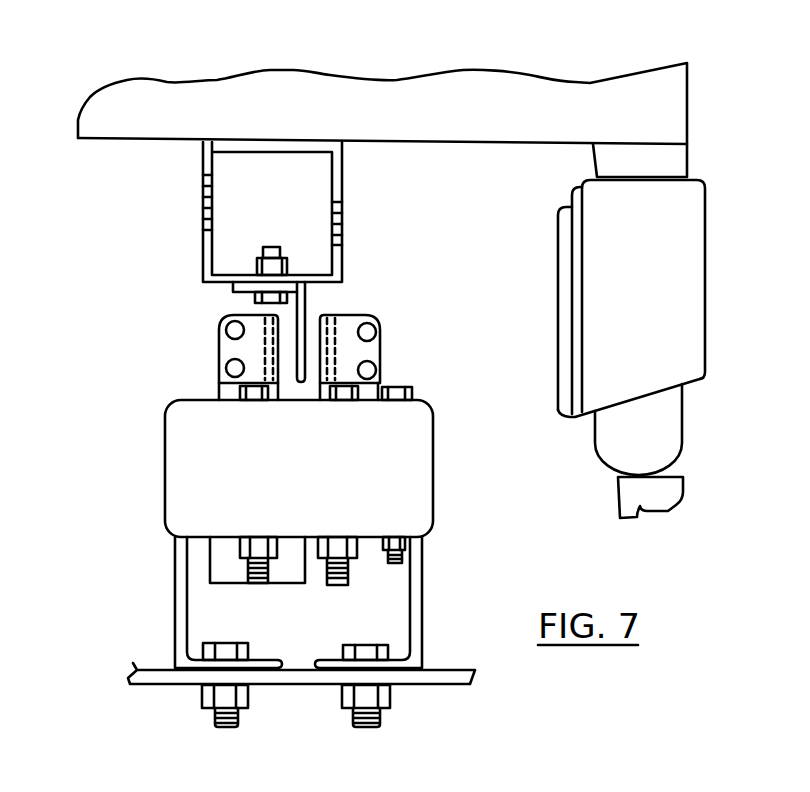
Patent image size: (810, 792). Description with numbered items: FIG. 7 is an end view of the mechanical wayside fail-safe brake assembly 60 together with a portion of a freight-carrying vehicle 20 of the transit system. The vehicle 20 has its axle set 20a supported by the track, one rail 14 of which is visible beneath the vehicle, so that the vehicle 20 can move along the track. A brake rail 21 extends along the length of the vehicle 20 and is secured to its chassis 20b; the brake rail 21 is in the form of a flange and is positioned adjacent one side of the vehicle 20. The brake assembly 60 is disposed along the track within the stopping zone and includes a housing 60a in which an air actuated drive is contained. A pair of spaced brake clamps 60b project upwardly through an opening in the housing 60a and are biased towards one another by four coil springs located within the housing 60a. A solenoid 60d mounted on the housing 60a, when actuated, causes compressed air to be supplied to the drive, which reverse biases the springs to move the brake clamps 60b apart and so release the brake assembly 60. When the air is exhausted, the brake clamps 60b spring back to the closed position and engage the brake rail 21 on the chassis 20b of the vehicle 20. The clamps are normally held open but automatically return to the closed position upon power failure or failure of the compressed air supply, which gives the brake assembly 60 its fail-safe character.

The freight-carrying vehicle 20 is at (562, 95).
The axle set 20a is at (690, 237).
The chassis 20b is at (378, 143).
The brake rail 21 is at (301, 300).
The rail 14 is at (658, 495).
The brake assembly 60 is at (267, 521).
The housing 60a is at (417, 478).
The brake clamps 60b is at (228, 350).
The solenoid 60d is at (280, 577).